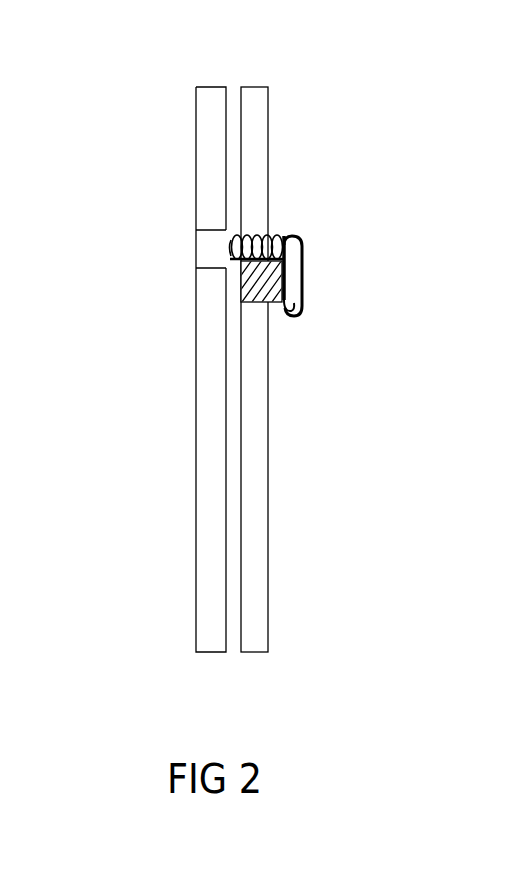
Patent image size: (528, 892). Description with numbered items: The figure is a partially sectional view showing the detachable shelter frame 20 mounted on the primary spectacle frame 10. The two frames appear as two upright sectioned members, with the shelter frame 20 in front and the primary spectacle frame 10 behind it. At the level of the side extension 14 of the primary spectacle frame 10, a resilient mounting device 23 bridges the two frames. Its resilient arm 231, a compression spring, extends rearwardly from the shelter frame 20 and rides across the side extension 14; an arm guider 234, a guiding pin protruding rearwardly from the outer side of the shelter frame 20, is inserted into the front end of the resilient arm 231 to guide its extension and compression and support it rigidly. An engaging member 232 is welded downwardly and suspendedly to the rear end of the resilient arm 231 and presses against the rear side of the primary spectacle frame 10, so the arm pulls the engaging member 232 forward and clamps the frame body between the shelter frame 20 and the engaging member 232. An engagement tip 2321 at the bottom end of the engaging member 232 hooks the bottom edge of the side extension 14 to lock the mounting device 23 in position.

The primary spectacle frame 10 is at (320, 602).
The detachable shelter frame 20 is at (150, 608).
The side extension 14 is at (248, 293).
The arm guider 234 is at (236, 256).
The resilient mounting device 23 is at (465, 195).
The resilient arm 231 is at (252, 237).
The engaging member 232 is at (299, 268).
The engagement tip 2321 is at (283, 318).